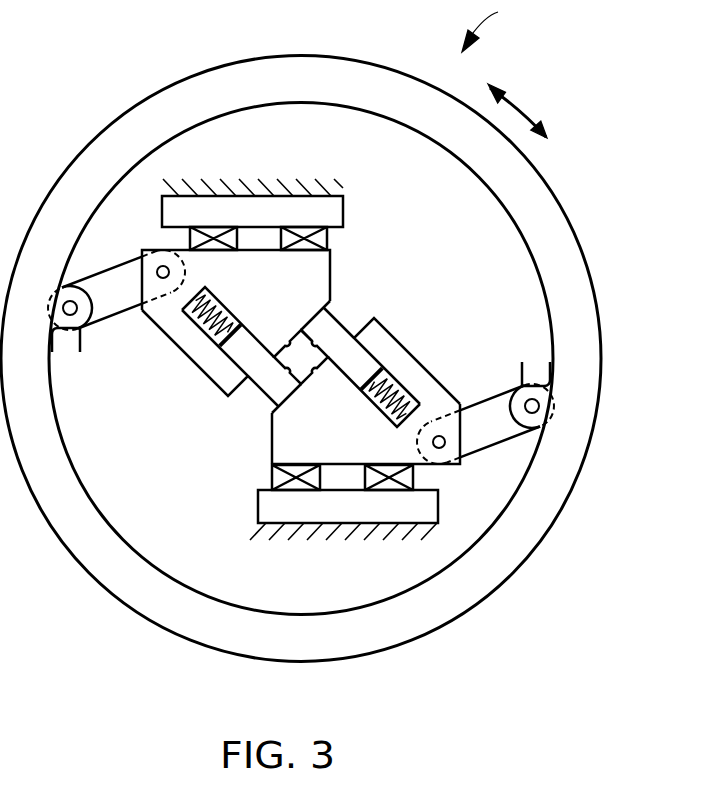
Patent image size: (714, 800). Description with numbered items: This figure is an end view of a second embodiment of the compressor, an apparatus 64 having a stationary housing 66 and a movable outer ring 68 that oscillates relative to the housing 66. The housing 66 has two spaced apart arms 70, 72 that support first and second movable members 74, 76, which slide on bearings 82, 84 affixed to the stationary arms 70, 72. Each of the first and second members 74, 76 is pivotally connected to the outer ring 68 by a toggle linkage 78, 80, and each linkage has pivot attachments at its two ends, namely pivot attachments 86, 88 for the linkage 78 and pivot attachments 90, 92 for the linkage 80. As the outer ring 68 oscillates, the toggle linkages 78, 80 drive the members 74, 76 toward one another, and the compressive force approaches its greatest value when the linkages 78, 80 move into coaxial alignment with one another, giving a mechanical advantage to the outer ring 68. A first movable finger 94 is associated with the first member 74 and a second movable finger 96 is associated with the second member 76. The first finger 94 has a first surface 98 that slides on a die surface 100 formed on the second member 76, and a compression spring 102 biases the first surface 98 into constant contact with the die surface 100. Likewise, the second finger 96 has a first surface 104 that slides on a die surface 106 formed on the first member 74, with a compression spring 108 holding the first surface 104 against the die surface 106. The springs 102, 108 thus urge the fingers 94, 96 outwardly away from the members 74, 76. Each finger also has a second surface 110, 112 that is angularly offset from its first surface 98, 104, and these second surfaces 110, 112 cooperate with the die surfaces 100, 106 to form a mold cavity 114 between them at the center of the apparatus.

The apparatus 64 is at (493, 26).
The housing 66 is at (277, 184).
The movable outer ring 68 is at (563, 227).
The arm 70 is at (336, 210).
The arm 72 is at (268, 500).
The first movable member 74 is at (262, 282).
The second movable member 76 is at (378, 452).
The toggle linkage 78 is at (108, 316).
The toggle linkage 80 is at (466, 458).
The bearing 82 is at (190, 241).
The bearing 84 is at (271, 467).
The pivot attachment 86 is at (74, 315).
The pivot attachment 88 is at (157, 276).
The pivot attachment 90 is at (536, 376).
The pivot attachment 92 is at (448, 444).
The first movable finger 94 is at (272, 412).
The second movable finger 96 is at (330, 345).
The first surface 98 is at (294, 405).
The die surface 100 is at (316, 370).
The compression spring 102 is at (196, 323).
The first surface 104 is at (306, 312).
The die surface 106 is at (289, 338).
The compression spring 108 is at (407, 383).
The second surface 110 is at (278, 366).
The second surface 112 is at (315, 327).
The mold cavity 114 is at (375, 318).